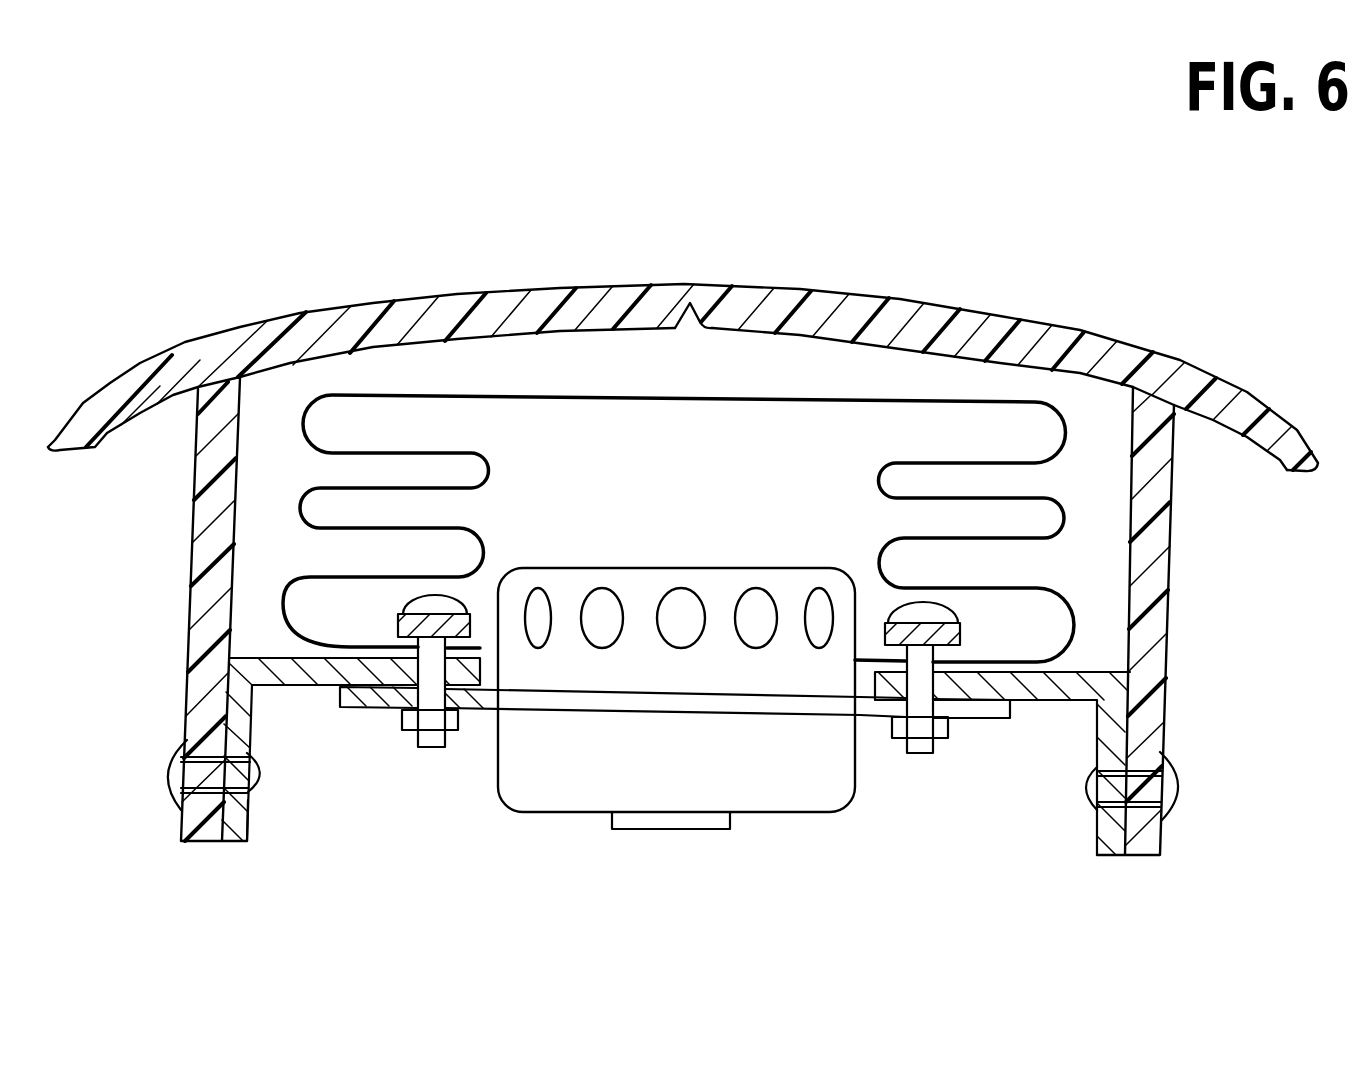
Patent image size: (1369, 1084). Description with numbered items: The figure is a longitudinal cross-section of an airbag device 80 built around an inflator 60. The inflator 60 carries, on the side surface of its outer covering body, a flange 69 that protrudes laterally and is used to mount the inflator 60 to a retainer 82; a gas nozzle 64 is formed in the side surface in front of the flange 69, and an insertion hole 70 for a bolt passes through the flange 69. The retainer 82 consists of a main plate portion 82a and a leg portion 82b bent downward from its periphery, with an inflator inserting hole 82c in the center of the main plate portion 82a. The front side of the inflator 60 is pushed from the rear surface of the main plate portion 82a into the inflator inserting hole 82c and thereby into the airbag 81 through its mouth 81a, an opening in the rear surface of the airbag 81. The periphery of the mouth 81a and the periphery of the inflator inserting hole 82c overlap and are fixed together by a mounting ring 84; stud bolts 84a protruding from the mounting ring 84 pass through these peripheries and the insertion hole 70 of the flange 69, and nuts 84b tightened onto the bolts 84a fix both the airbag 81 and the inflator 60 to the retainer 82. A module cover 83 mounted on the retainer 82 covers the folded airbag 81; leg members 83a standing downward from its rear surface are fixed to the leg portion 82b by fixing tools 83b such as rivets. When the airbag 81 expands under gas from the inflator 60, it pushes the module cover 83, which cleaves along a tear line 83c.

The airbag device 80 is at (677, 226).
The module cover 83 is at (240, 326).
The leg member 83a is at (194, 540).
The fixing tool 83b is at (168, 770).
The tear line 83c is at (692, 331).
The airbag 81 is at (898, 399).
The mouth 81a is at (855, 658).
The retainer 82 is at (254, 686).
The main plate portion 82a is at (232, 657).
The leg portion 82b is at (248, 818).
The inflator inserting hole 82c is at (845, 702).
The insertion hole 70 is at (386, 709).
The flange 69 is at (985, 720).
The inflator 60 is at (540, 813).
The gas nozzle 64 is at (755, 605).
The mounting ring 84 is at (960, 635).
The bolt 84a is at (466, 702).
The nut 84b is at (412, 732).